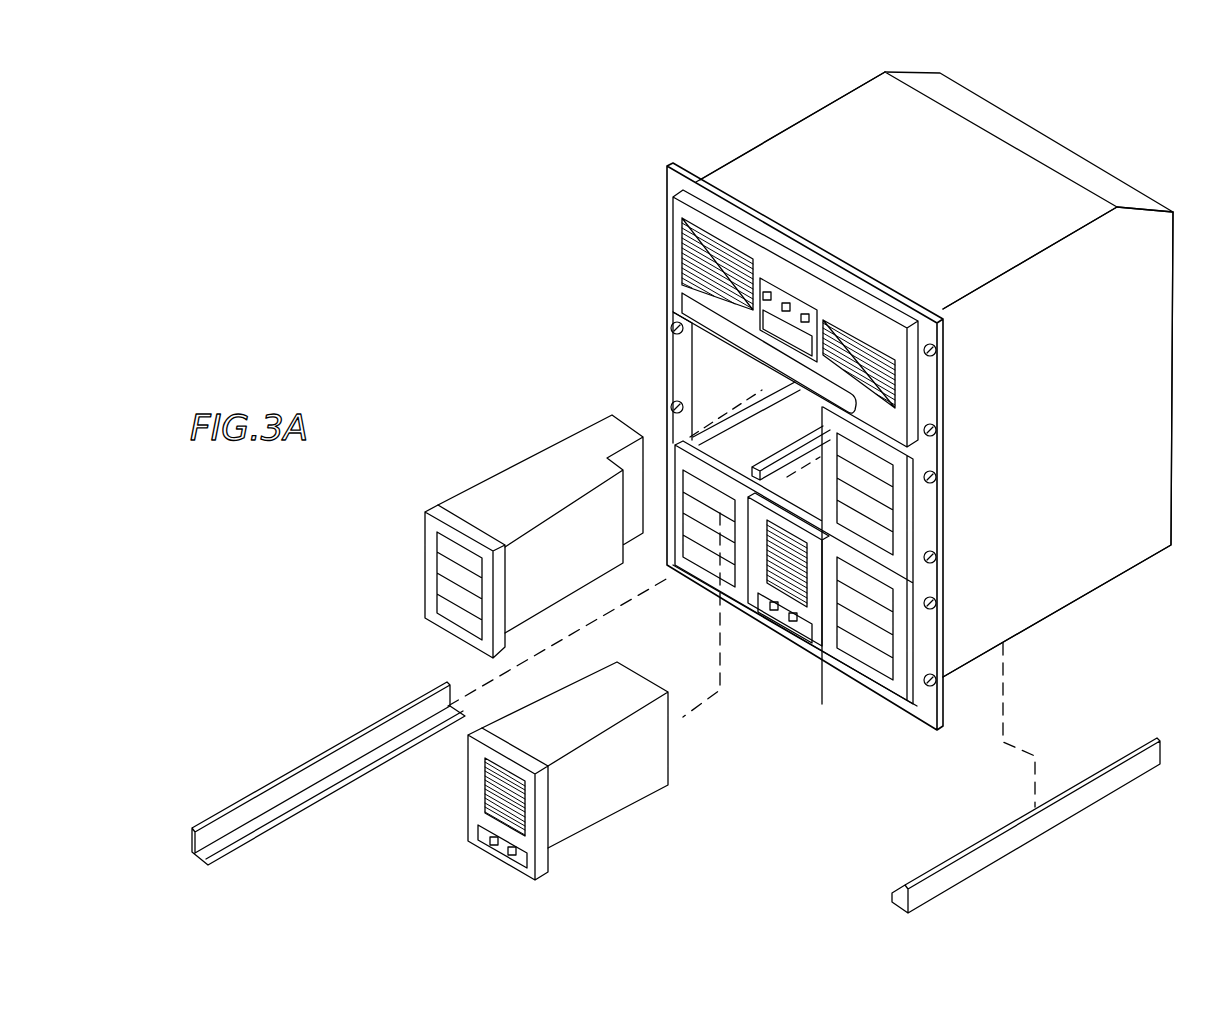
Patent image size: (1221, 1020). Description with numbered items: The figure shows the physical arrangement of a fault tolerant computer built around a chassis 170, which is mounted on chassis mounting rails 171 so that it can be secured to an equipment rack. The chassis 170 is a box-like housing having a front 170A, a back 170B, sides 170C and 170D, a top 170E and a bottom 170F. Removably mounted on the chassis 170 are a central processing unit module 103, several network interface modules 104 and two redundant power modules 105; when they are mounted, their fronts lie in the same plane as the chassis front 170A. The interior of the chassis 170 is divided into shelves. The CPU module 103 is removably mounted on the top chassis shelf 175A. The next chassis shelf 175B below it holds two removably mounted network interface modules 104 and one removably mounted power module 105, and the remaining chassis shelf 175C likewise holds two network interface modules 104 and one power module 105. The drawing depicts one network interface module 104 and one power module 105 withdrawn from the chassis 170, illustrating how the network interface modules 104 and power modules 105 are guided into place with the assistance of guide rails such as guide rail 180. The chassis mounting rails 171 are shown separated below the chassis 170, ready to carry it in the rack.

The central processing unit (CPU) module 103 is at (678, 210).
The network interface module 104 is at (515, 500).
The power module 105 is at (778, 605).
The chassis 170 is at (618, 140).
The front 170A is at (535, 356).
The back 170B is at (1052, 94).
The side 170C is at (708, 127).
The side 170D is at (1080, 555).
The top 170E is at (840, 78).
The bottom 170F is at (758, 698).
The chassis mounting rail 171 is at (318, 755).
The top chassis shelf 175A is at (703, 338).
The chassis shelf 175B is at (695, 440).
The chassis shelf 175C is at (712, 592).
The guide rail 180 is at (792, 452).